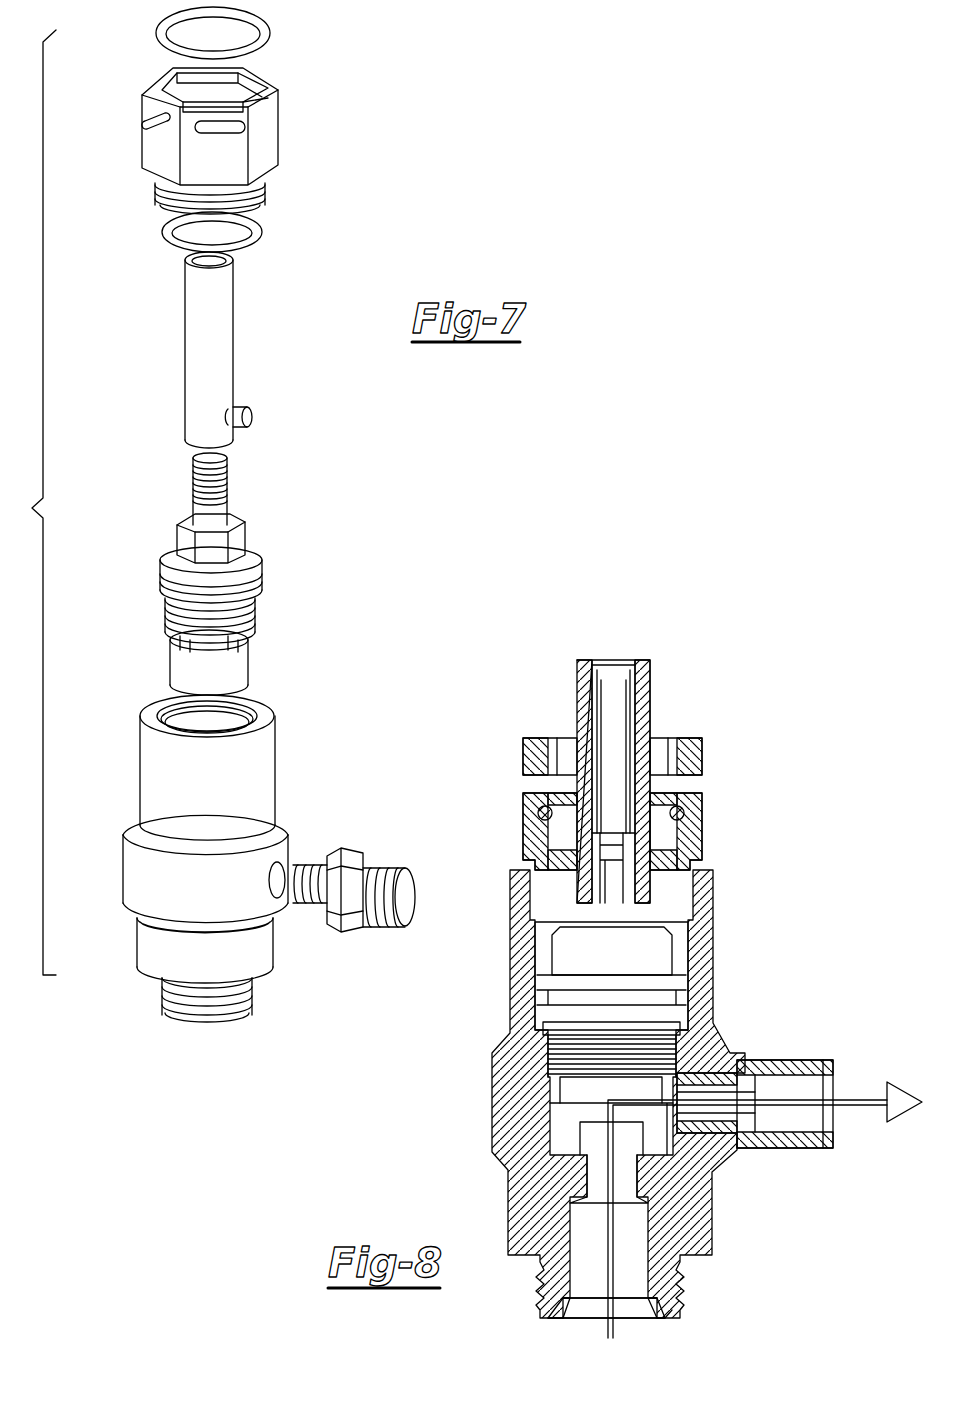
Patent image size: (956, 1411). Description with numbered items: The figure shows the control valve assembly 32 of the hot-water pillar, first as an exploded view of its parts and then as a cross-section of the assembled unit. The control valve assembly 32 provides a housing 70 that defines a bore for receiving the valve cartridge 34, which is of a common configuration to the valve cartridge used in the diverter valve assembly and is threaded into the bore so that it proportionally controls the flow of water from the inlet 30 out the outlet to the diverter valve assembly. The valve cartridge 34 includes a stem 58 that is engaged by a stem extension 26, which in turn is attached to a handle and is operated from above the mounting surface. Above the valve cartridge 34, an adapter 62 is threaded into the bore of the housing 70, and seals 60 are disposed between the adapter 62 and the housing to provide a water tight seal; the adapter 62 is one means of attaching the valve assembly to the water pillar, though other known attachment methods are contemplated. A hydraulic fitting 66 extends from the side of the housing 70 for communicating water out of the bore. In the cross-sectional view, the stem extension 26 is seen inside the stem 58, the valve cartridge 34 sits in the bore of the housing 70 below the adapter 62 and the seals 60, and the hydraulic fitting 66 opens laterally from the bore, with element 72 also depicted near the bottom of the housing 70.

In FIG. 8, the stem extension 26 is at (612, 680).
In FIG. 8, the inlet 30 is at (635, 1320).
In FIG. 8, the control valve assembly 32 is at (785, 815).
In FIG. 7, the valve cartridge 34 is at (252, 585).
In FIG. 8, the valve cartridge 34 is at (657, 960).
In FIG. 7, the stem 58 is at (217, 287).
In FIG. 8, the stem 58 is at (585, 692).
In FIG. 7, the seal 60 is at (158, 38).
In FIG. 7, the adapter 62 is at (263, 145).
In FIG. 8, the adapter 62 is at (530, 818).
In FIG. 7, the hydraulic fitting 66 is at (350, 857).
In FIG. 8, the hydraulic fitting 66 is at (802, 1145).
In FIG. 7, the housing 70 is at (260, 758).
In FIG. 8, the housing 70 is at (700, 1012).
In FIG. 8, the capillary tube 72 is at (605, 1328).